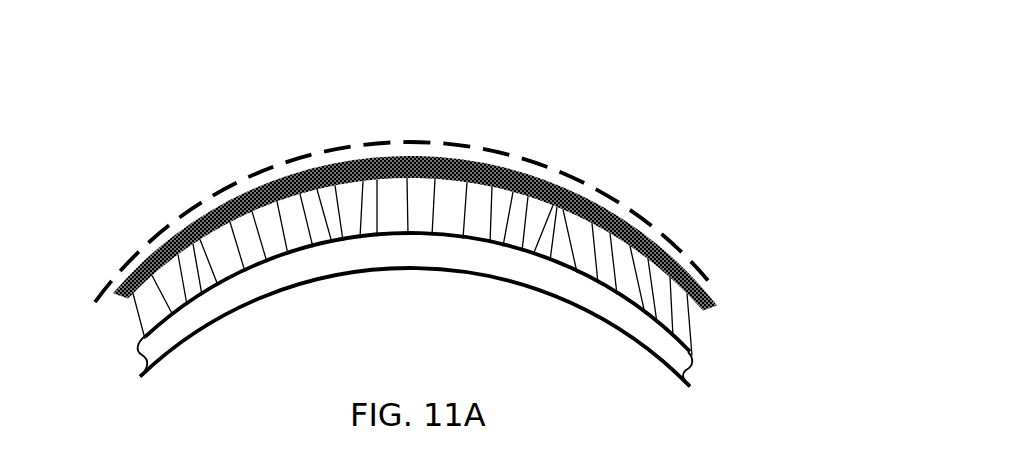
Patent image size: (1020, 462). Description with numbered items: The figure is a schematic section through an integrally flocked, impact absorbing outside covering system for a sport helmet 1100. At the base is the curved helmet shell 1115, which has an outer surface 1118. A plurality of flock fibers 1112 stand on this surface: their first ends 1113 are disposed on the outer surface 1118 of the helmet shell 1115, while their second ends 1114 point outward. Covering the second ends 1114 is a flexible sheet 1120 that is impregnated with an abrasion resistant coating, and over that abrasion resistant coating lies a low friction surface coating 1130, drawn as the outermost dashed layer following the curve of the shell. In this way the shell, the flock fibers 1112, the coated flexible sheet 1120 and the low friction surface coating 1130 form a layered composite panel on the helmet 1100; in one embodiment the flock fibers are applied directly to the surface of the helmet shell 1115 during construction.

The sport helmet 1100 is at (474, 211).
The low friction surface coating 1130 is at (547, 163).
The flexible sheet 1120 is at (720, 303).
The flock fibers 1112 is at (469, 267).
The second ends 1114 is at (136, 315).
The first ends 1113 is at (147, 327).
The outer surface 1118 is at (690, 348).
The helmet shell 1115 is at (688, 350).